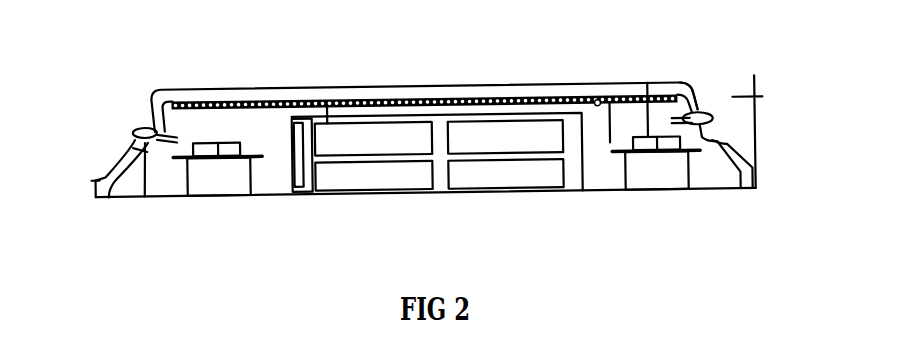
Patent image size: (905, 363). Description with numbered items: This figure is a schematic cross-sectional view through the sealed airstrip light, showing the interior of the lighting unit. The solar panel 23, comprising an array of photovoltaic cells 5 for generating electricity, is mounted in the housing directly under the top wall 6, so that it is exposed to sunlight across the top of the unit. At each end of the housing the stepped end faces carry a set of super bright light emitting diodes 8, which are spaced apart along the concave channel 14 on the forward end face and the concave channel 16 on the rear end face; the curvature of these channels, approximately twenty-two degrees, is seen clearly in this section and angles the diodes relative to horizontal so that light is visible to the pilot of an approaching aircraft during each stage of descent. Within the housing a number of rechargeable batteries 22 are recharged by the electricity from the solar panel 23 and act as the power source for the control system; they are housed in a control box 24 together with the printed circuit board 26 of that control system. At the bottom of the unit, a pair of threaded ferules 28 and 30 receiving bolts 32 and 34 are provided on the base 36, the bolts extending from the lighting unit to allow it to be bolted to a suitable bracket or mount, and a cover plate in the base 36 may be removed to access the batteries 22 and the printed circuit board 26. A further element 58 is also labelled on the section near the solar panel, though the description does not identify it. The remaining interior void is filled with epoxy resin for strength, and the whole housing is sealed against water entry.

The photovoltaic cells 5 is at (304, 100).
The top wall 6 is at (210, 100).
The light emitting diodes 8 is at (143, 126).
The concave channel 14 is at (713, 173).
The concave channel 16 is at (142, 198).
The rechargeable batteries 22 is at (385, 190).
The solar panel 23 is at (680, 98).
The control box 24 is at (578, 190).
The printed circuit board 26 is at (293, 198).
The threaded ferule 28 is at (190, 180).
The threaded ferule 30 is at (668, 190).
The bolt 32 is at (205, 140).
The bolt 34 is at (637, 97).
The base 36 is at (248, 198).
The light emitting diode 58 is at (594, 97).